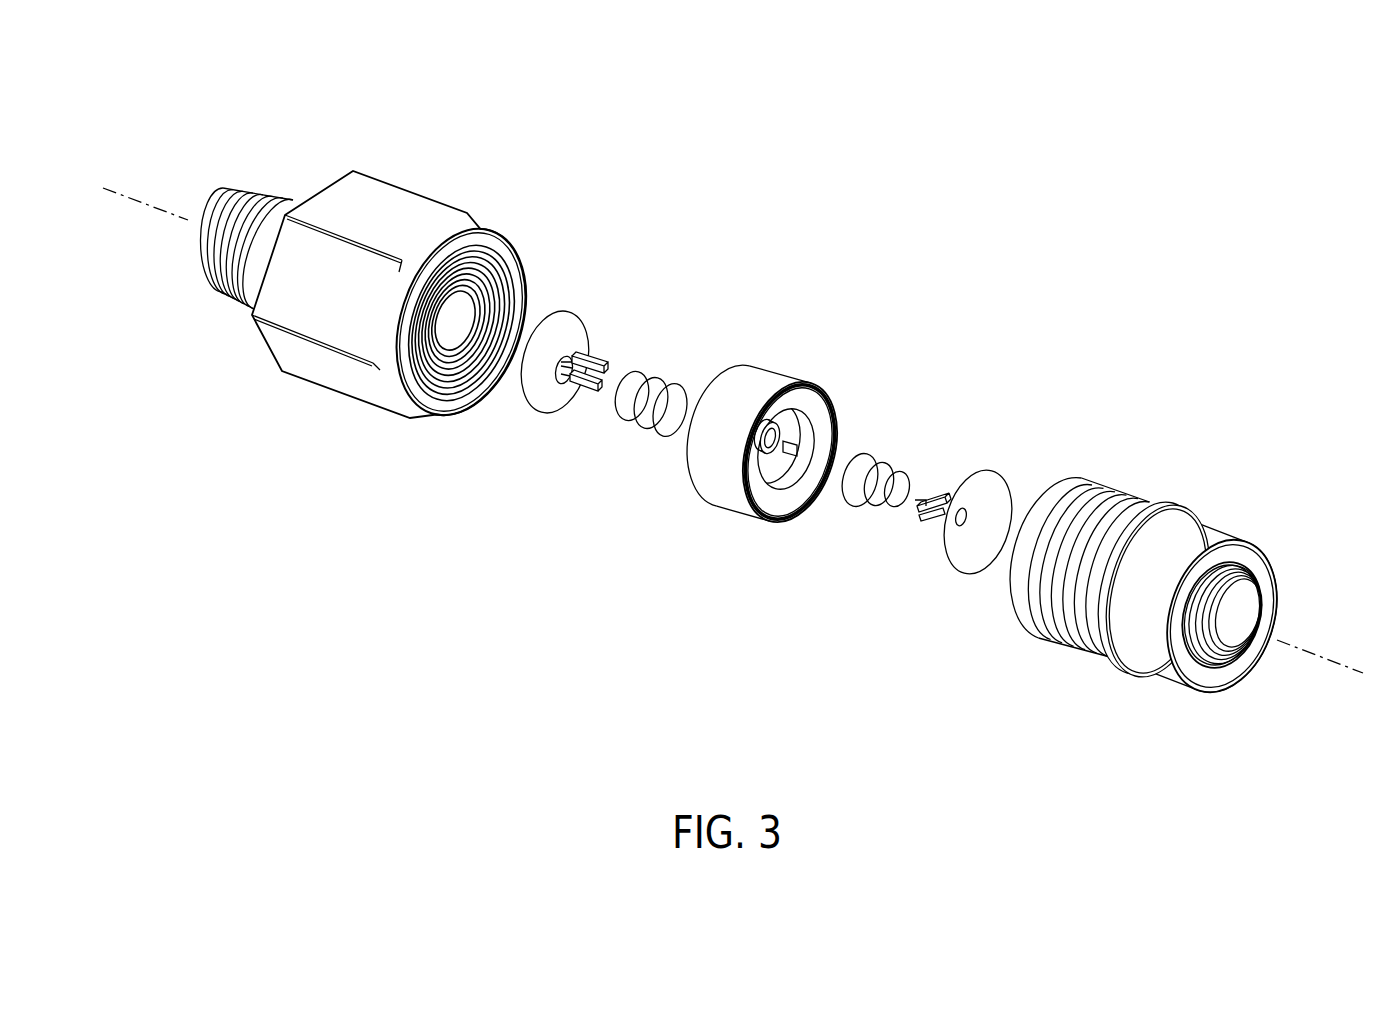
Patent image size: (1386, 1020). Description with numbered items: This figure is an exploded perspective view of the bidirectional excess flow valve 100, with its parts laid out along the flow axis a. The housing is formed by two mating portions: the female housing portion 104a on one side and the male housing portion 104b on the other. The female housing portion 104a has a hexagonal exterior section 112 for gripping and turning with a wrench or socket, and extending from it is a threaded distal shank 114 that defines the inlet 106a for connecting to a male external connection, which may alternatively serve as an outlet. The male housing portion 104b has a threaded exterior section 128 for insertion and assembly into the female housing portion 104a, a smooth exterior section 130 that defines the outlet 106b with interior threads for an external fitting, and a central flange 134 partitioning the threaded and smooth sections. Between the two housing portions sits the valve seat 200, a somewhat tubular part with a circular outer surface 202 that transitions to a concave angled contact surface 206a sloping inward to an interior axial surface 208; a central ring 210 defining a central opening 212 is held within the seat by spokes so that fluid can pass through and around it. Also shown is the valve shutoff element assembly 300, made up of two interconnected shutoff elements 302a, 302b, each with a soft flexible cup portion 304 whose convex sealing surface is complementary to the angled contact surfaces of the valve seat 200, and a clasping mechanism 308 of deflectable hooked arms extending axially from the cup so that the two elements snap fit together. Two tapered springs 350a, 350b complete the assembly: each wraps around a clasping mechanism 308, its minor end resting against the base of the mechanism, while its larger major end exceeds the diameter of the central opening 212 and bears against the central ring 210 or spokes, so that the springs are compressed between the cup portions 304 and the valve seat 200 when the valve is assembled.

The bidirectional excess flow valve 100 is at (318, 100).
The female housing portion 104a is at (338, 402).
The male housing portion 104b is at (1110, 672).
The inlet 106a is at (240, 195).
The outlet 106b is at (1247, 612).
The hexagonal exterior section 112 is at (424, 208).
The threaded distal shank 114 is at (266, 200).
The threaded exterior section 128 is at (1120, 487).
The smooth exterior section 130 is at (1200, 538).
The central flange 134 is at (1172, 500).
The valve seat 200 is at (728, 517).
The circular outer surface 202 is at (748, 375).
The angled contact surface 206a is at (790, 493).
The interior axial surface 208 is at (797, 462).
The central ring 210 is at (760, 500).
The central opening 212 is at (802, 392).
The valve shutoff element assembly 300 is at (648, 314).
The shutoff element 302a is at (538, 416).
The shutoff element 302b is at (955, 575).
The cup portion 304 is at (556, 322).
The clasping mechanism 308 is at (606, 352).
The spring 350a is at (658, 435).
The spring 350b is at (875, 510).